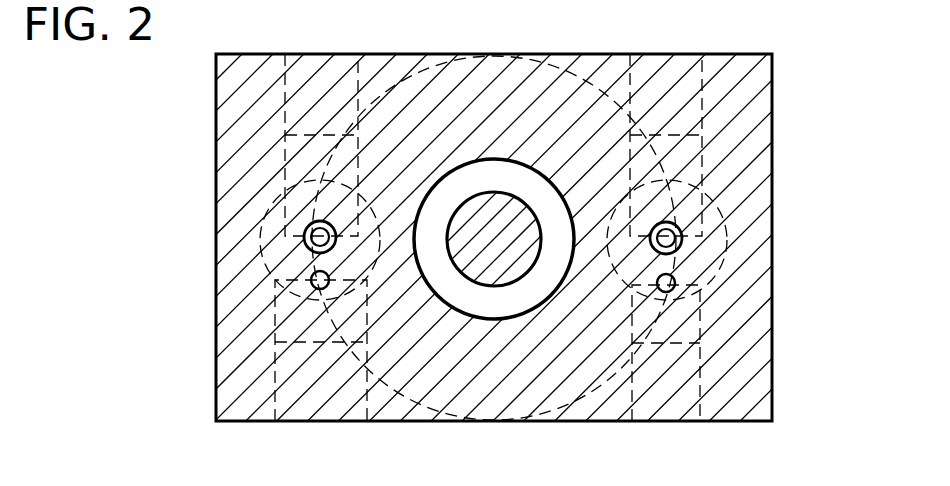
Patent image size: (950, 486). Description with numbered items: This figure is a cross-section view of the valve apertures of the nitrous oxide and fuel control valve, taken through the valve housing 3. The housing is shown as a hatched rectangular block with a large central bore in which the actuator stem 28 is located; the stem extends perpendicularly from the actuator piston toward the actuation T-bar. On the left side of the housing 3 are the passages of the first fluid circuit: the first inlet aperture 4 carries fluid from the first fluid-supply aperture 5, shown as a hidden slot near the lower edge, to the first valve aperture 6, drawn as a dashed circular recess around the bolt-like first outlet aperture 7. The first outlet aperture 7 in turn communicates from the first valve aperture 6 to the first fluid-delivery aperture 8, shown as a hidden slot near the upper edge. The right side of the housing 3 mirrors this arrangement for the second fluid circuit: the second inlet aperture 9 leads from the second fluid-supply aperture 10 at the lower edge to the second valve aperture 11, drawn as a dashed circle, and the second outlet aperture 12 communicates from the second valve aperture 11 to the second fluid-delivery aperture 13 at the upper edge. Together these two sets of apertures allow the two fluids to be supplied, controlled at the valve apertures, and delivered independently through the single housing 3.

The valve housing 3 is at (216, 105).
The first fluid-delivery aperture 8 is at (287, 143).
The first valve aperture 6 is at (277, 195).
The first outlet aperture 7 is at (304, 238).
The first inlet aperture 4 is at (311, 280).
The first fluid-supply aperture 5 is at (274, 375).
The second fluid-delivery aperture 13 is at (702, 107).
The second valve aperture 11 is at (715, 200).
The second outlet aperture 12 is at (683, 237).
The second inlet aperture 9 is at (676, 282).
The second fluid-supply aperture 10 is at (700, 350).
The actuator stem 28 is at (495, 240).